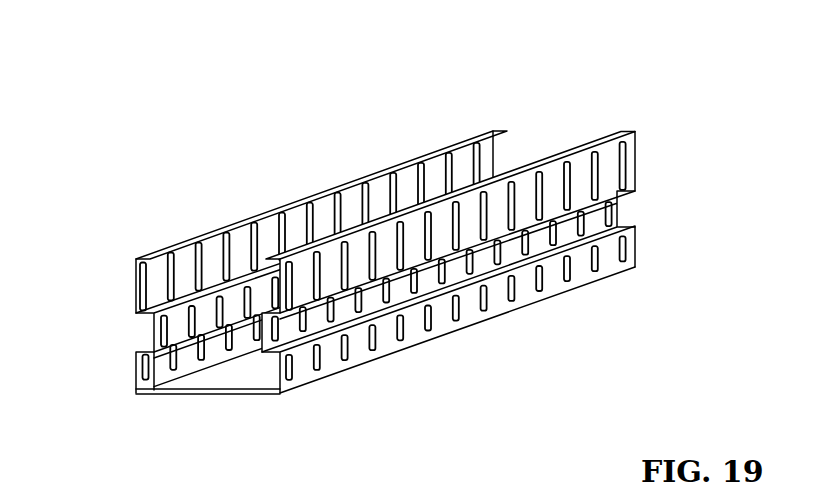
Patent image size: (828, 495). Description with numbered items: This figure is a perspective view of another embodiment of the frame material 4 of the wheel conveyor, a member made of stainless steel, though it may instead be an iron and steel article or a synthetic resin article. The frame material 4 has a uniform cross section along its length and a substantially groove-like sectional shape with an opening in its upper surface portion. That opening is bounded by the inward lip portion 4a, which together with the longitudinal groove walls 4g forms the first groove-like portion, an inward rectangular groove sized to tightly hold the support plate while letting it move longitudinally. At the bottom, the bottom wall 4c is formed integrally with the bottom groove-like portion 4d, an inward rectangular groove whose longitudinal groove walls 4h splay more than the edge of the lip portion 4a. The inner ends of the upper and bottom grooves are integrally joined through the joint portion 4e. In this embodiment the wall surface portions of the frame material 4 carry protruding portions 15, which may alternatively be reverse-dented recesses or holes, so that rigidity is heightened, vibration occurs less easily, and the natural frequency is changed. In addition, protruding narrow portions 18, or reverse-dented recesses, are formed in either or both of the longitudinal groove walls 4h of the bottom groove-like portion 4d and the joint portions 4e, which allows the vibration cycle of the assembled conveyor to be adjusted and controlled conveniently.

The frame material 4 is at (362, 147).
The inward lip portion 4a is at (304, 207).
The bottom wall 4c is at (234, 395).
The bottom groove-like portion 4d is at (156, 366).
The joint portion 4e is at (154, 321).
The longitudinal groove wall 4g is at (636, 140).
The longitudinal groove wall 4h is at (133, 384).
The protruding portion 15 is at (452, 172).
The protruding narrow portion 18 is at (207, 293).